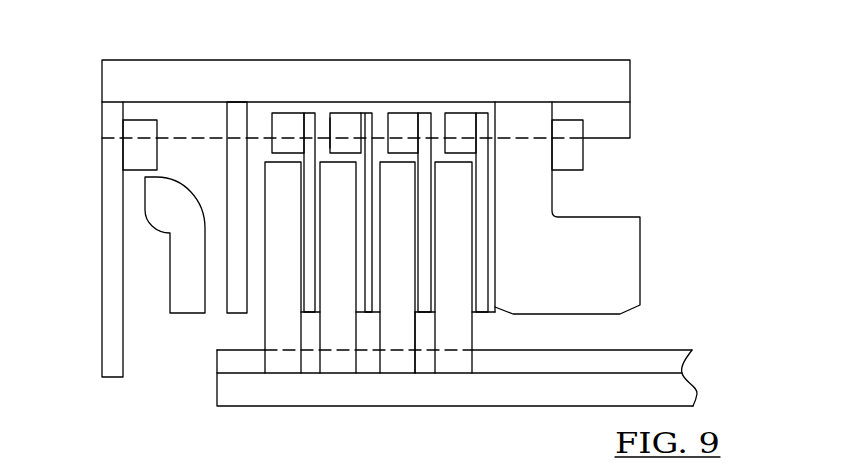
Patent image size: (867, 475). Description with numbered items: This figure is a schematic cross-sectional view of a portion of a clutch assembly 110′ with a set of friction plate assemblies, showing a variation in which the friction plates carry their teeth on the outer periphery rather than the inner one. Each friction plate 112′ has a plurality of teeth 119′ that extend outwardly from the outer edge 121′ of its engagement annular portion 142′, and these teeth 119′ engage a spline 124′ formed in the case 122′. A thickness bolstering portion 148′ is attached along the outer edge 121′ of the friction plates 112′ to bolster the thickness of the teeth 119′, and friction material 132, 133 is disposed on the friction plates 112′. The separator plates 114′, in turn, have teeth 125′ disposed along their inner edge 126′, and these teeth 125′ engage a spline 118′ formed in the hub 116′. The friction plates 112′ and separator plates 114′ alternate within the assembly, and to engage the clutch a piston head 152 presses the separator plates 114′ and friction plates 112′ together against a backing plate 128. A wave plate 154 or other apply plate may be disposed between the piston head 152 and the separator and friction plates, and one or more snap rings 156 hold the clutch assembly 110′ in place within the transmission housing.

The clutch assembly 110′ is at (508, 336).
The friction plate 112′ is at (470, 157).
The separator plate 114′ is at (265, 326).
The hub 116′ is at (548, 385).
The spline 118′ is at (380, 357).
The teeth 119′ is at (352, 127).
The outer edge 121′ is at (405, 112).
The case 122′ is at (225, 85).
The spline 124′ is at (332, 126).
The teeth 125′ is at (462, 360).
The inner edge 126′ is at (453, 373).
The backing plate 128 is at (598, 270).
The friction material 132 is at (417, 313).
The friction material 133 is at (432, 313).
The engagement annular portion 142′ is at (291, 113).
The thickness bolstering portion 148′ is at (282, 145).
The piston head 152 is at (182, 267).
The wave plate 154 is at (227, 187).
The snap ring 156 is at (132, 132).